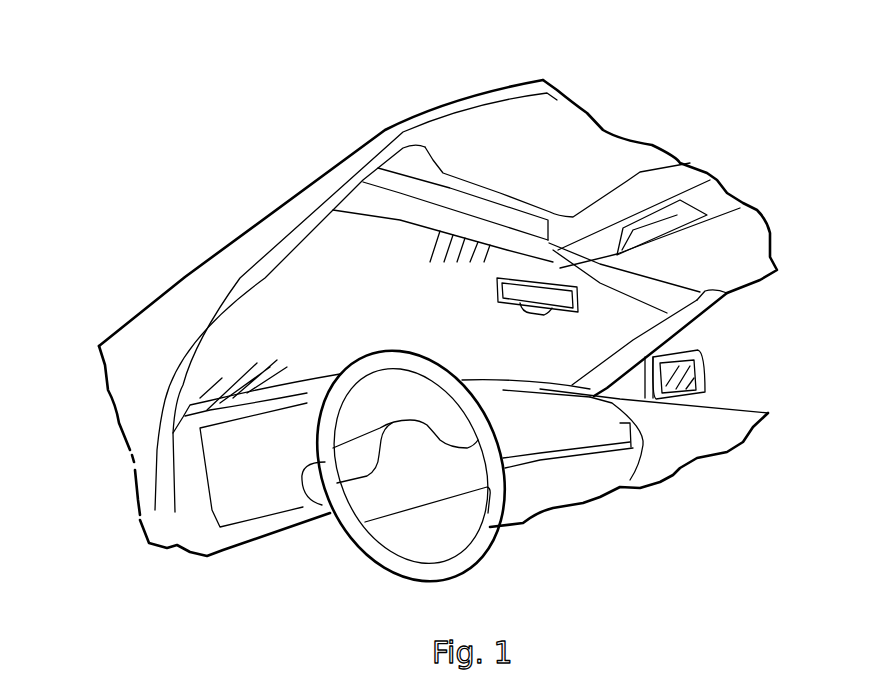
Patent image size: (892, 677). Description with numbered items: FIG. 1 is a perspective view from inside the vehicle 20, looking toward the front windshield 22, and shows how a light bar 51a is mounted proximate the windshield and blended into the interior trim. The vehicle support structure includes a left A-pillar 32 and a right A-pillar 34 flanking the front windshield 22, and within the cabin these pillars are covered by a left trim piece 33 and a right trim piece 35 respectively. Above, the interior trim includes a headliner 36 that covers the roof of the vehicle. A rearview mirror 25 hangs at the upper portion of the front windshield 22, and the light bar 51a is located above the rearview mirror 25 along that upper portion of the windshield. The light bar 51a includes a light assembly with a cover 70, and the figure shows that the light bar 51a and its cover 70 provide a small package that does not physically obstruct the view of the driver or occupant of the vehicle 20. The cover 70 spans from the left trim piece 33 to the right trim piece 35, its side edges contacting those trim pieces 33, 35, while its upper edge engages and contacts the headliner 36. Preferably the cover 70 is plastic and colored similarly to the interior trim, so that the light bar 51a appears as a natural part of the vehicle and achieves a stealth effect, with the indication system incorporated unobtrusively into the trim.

The vehicle 20 is at (284, 565).
The front windshield 22 is at (418, 333).
The rearview mirror 25 is at (538, 312).
The left A-pillar 32 is at (192, 270).
The left trim piece 33 is at (200, 302).
The right A-pillar 34 is at (715, 306).
The right trim piece 35 is at (613, 378).
The headliner 36 is at (420, 170).
The light bar 51a is at (367, 240).
The cover 70 is at (410, 205).